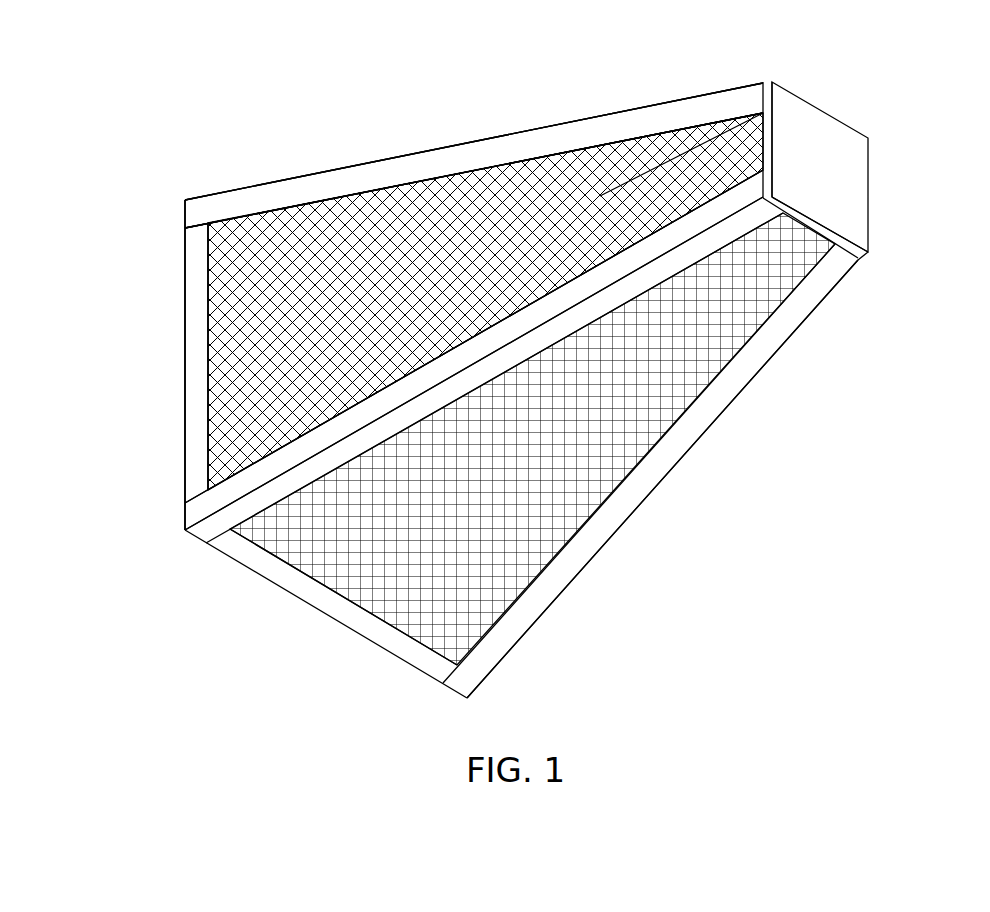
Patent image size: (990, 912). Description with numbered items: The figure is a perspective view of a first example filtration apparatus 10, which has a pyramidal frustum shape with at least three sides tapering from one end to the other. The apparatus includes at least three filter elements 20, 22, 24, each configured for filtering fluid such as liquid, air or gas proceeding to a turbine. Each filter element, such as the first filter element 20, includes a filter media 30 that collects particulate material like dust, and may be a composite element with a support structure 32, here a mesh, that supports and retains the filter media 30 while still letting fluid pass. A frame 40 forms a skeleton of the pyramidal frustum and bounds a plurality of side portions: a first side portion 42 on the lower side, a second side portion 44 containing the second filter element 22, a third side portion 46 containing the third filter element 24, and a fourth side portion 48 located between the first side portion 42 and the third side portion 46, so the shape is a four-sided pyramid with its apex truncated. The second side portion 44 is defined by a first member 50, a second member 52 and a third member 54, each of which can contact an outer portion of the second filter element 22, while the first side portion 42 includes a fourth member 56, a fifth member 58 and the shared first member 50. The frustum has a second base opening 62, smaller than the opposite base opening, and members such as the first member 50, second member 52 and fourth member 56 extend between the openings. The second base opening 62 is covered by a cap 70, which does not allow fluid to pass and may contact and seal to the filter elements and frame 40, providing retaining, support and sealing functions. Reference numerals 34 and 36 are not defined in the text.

The filtration apparatus 10 is at (694, 534).
The first filter element 20 is at (302, 568).
The second filter element 22 is at (300, 242).
The third filter element 24 is at (586, 104).
The filter media 30 is at (706, 346).
The support structure 32 is at (752, 320).
The top rail inner edge 34 is at (672, 148).
The back mesh 36 is at (516, 178).
The frame 40 is at (166, 412).
The first side portion 42 is at (370, 590).
The second side portion 44 is at (232, 334).
The third side portion 46 is at (444, 130).
The fourth side portion 48 is at (602, 574).
The first member 50 is at (186, 518).
The second member 52 is at (382, 172).
The third member 54 is at (186, 272).
The fourth member 56 is at (522, 615).
The fifth member 58 is at (404, 650).
The second base opening 62 is at (882, 212).
The cap 70 is at (838, 154).